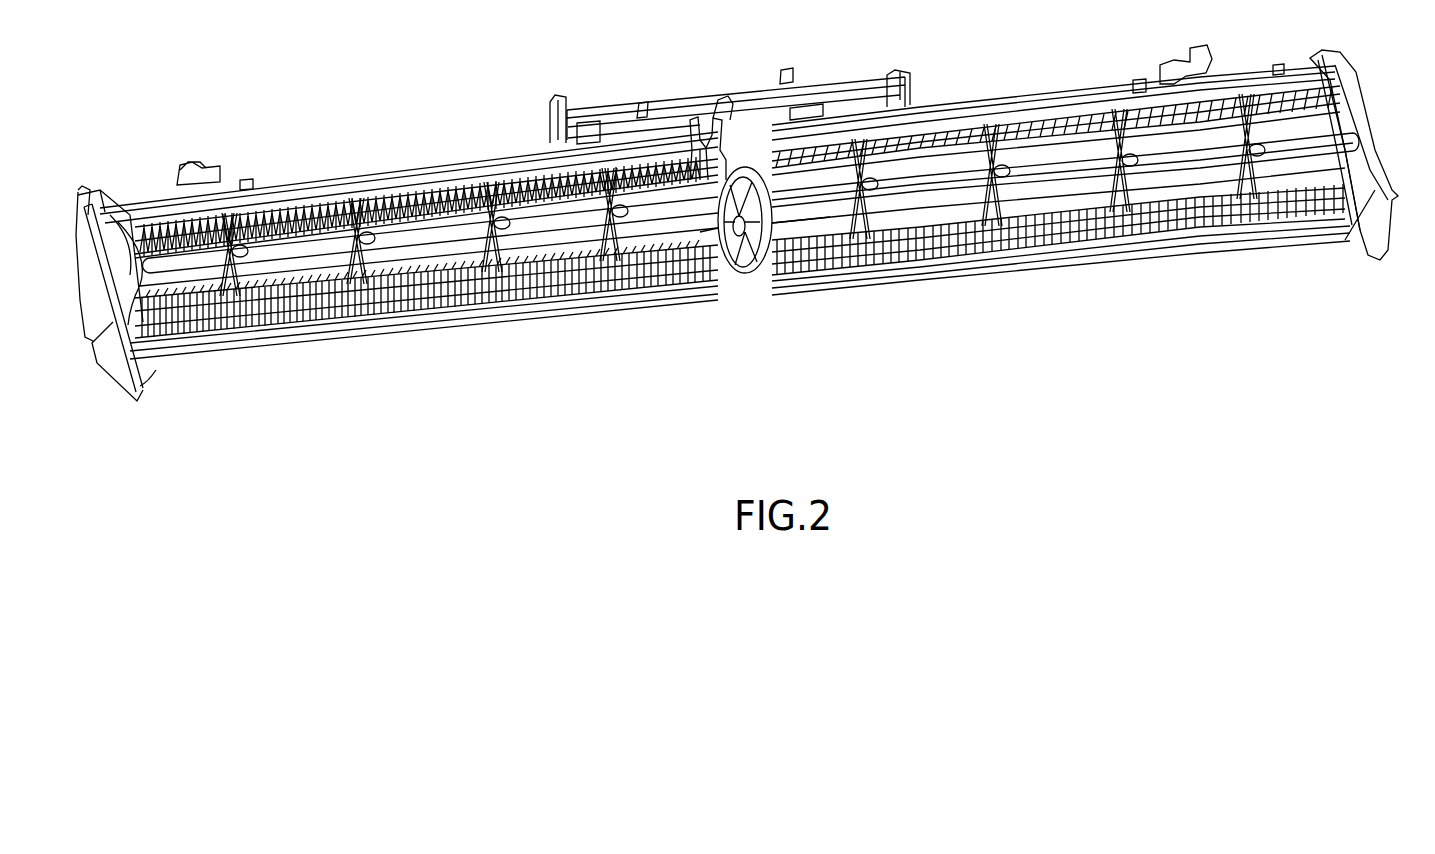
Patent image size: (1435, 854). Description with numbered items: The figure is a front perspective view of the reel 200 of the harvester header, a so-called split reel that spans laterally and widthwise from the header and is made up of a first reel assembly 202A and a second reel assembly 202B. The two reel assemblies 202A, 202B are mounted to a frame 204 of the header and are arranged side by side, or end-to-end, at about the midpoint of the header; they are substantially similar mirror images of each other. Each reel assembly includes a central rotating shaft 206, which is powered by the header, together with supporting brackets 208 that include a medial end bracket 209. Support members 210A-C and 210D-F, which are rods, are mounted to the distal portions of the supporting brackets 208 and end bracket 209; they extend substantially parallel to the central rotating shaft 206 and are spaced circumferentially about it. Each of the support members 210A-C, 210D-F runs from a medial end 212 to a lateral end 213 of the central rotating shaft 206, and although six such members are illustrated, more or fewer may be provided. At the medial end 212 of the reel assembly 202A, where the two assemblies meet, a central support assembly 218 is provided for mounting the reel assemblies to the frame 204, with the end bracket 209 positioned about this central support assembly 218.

The reel 200 is at (722, 395).
The first reel assembly 202A is at (467, 375).
The second reel assembly 202B is at (1093, 277).
The frame 204 is at (607, 105).
The central rotating shaft 206 is at (930, 183).
The supporting brackets 208 is at (982, 198).
The medial end bracket 209 is at (740, 265).
The support members 210A-C is at (300, 318).
The support members 210D-F is at (397, 210).
The medial end 212 is at (723, 313).
The lateral end 213 is at (188, 390).
The central support assembly 218 is at (708, 122).